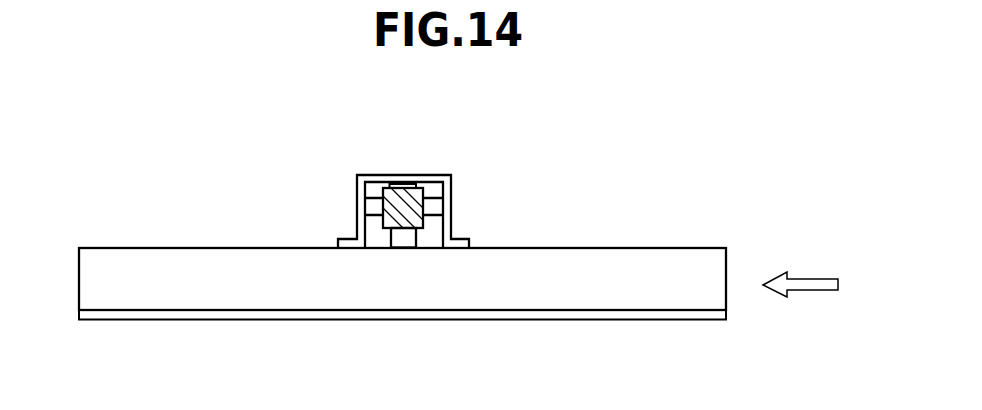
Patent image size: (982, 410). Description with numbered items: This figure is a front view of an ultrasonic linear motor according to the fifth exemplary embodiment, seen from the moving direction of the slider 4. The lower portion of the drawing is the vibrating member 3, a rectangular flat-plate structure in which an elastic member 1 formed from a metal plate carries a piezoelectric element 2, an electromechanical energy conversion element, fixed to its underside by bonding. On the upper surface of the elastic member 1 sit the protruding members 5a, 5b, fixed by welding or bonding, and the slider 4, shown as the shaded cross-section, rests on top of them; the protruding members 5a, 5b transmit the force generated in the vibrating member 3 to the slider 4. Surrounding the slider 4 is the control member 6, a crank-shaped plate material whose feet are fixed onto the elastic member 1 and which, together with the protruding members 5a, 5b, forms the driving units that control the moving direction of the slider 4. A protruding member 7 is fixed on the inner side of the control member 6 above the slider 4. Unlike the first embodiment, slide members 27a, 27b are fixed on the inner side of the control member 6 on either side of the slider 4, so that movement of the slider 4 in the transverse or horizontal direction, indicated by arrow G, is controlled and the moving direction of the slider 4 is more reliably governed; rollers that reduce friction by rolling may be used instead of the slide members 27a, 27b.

The elastic member 1 is at (727, 272).
The piezoelectric element 2 is at (727, 313).
The vibrating member 3 is at (724, 231).
The slider 4 is at (407, 194).
The protruding member 5a is at (337, 227).
The protruding member 5b is at (402, 237).
The control member 6 is at (451, 225).
The protruding member 7 is at (395, 184).
The slide member 27a is at (376, 207).
The slide member 27b is at (436, 201).
The arrow G is at (800, 276).